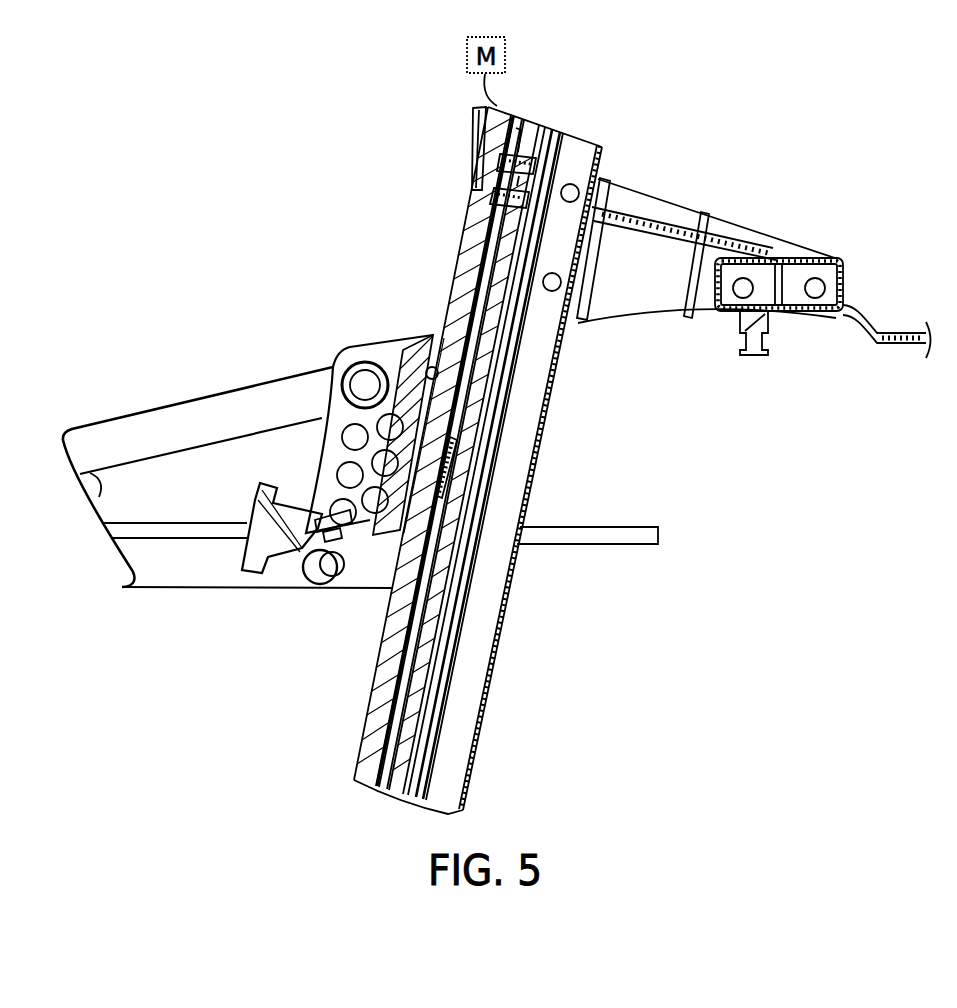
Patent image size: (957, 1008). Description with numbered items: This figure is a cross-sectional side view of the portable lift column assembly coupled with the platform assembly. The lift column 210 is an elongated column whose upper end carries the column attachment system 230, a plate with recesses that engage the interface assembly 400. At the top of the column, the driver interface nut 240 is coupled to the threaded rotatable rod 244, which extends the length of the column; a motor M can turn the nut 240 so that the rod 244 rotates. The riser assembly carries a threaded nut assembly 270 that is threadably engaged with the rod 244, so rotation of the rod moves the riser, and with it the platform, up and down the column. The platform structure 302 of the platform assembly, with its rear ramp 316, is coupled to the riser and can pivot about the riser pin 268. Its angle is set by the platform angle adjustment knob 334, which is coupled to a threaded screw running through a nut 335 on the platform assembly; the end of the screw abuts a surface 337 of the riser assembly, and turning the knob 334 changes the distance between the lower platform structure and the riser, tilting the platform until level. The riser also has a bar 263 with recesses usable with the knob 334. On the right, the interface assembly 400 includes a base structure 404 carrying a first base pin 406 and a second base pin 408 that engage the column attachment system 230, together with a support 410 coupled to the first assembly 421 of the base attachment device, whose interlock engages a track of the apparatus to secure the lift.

The lift column 210 is at (505, 790).
The column attachment system 230 is at (645, 188).
The driver interface nut 240 is at (520, 113).
The threaded rotatable rod 244 is at (468, 248).
The bar 263 is at (370, 570).
The first riser pin 268 is at (430, 370).
The threaded nut assembly 270 is at (450, 478).
The platform structure 302 is at (143, 502).
The rear ramp 316 is at (598, 545).
The platform angle adjustment knob 334 is at (300, 552).
The nut 335 is at (316, 578).
The surface 337 is at (336, 577).
The interface assembly 400 is at (830, 256).
The base structure 404 is at (840, 262).
The first base pin 406 is at (818, 288).
The second base pin 408 is at (745, 286).
The support 410 is at (890, 340).
The first assembly 421 is at (752, 350).